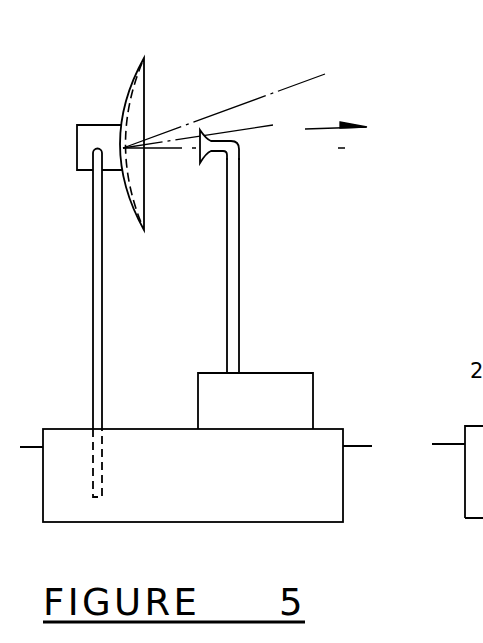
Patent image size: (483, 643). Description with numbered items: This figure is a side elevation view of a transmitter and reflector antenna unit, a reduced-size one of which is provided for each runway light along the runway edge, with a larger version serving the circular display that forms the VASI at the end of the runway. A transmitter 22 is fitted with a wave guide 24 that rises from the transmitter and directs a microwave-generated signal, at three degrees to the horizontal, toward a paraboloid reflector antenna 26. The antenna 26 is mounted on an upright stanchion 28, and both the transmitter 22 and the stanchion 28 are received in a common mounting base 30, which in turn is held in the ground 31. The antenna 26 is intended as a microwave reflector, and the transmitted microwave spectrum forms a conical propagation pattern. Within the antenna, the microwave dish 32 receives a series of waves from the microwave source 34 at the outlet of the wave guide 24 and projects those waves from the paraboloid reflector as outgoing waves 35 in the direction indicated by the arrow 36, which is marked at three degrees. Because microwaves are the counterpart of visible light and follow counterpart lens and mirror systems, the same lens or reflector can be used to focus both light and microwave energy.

The transmitter 22 is at (273, 390).
The wave guide 24 is at (235, 283).
The paraboloid reflector antenna 26 is at (135, 75).
The stanchion 28 is at (96, 330).
The mounting base 30 is at (218, 495).
The ground 31 is at (355, 463).
The microwave dish 32 is at (130, 107).
The microwave source 34 is at (199, 158).
The outgoing waves 35 is at (259, 110).
The arrow 36 is at (334, 128).